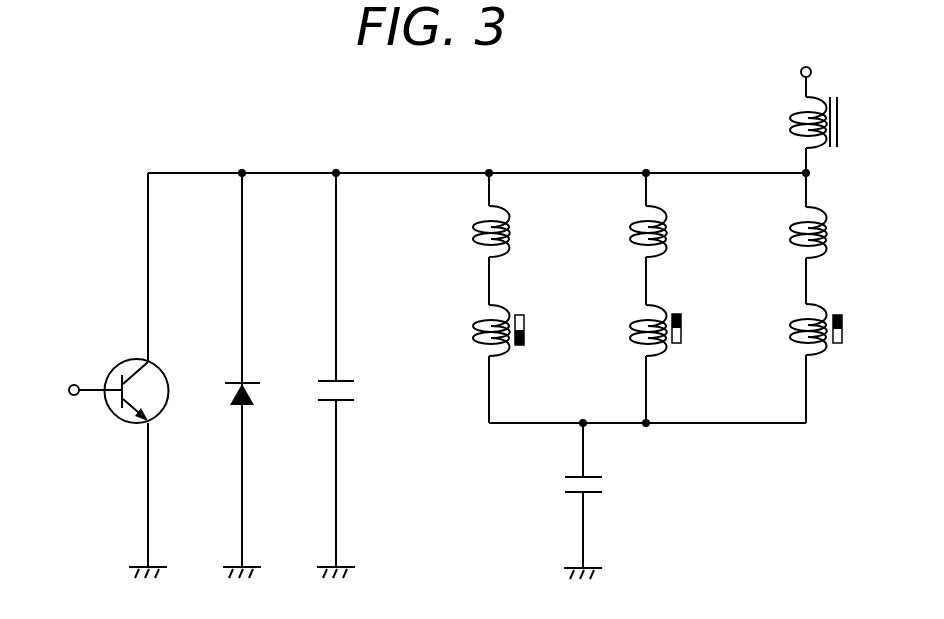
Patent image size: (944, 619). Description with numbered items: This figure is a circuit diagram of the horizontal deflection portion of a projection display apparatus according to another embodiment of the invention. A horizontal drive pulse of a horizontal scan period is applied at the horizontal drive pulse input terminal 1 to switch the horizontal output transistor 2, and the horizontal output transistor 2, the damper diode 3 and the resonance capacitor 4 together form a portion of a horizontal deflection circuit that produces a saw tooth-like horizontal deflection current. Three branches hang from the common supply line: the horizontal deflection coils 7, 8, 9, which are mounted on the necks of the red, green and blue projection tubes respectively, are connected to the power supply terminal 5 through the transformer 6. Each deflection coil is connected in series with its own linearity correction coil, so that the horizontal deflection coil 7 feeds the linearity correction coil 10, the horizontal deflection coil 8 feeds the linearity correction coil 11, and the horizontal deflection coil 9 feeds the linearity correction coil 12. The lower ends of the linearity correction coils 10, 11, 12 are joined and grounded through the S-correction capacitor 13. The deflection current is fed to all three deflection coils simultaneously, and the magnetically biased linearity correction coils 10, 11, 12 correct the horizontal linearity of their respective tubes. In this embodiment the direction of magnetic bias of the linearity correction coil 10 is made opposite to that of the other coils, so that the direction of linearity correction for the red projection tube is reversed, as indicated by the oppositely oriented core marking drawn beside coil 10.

The horizontal drive pulse input terminal 1 is at (75, 384).
The horizontal output transistor 2 is at (157, 363).
The damper diode 3 is at (250, 377).
The resonance capacitor 4 is at (345, 380).
The power supply terminal 5 is at (801, 74).
The transformer 6 is at (842, 125).
The horizontal deflection coil 7 is at (463, 236).
The horizontal deflection coil 8 is at (618, 237).
The horizontal deflection coil 9 is at (780, 234).
The linearity correction coil 10 is at (468, 334).
The linearity correction coil 11 is at (618, 331).
The linearity correction coil 12 is at (778, 332).
The S-correction capacitor 13 is at (563, 478).